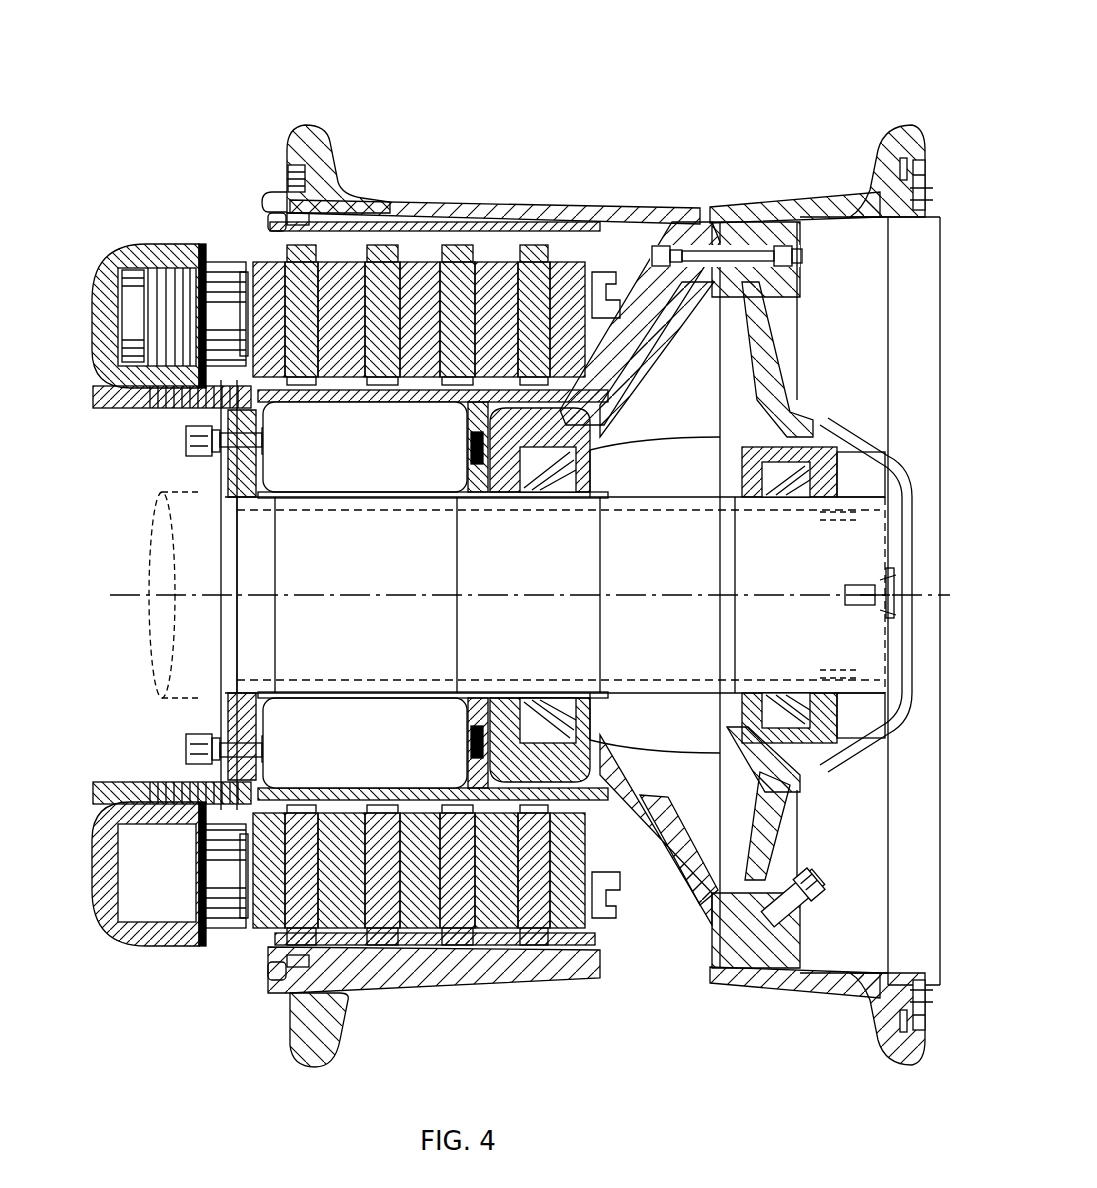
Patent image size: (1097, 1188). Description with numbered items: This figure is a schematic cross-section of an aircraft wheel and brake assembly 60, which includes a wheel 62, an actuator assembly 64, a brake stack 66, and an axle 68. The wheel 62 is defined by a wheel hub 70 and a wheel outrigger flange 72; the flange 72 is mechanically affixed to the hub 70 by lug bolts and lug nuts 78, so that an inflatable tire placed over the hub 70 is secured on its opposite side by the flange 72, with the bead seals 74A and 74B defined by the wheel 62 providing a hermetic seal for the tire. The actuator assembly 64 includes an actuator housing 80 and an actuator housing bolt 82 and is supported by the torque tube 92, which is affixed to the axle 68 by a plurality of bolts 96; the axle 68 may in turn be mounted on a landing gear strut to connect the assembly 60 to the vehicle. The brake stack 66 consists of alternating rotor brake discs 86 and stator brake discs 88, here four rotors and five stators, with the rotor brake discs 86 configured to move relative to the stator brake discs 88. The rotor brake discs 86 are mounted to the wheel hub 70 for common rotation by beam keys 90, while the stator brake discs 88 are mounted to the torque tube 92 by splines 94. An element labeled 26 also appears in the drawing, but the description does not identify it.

The wheel and brake assembly 60 is at (737, 69).
The wheel 62 is at (655, 175).
The actuator assembly 64 is at (95, 238).
The brake stack 66 is at (242, 968).
The axle 68 is at (541, 556).
The wheel hub 70 is at (508, 203).
The wheel outrigger flange 72 is at (790, 192).
The bead seal 74A is at (875, 160).
The bead seal 74B is at (338, 163).
The hub 26 is at (742, 232).
The lug nut 78 is at (803, 257).
The actuator housing 80 is at (88, 318).
The actuator housing bolt 82 is at (108, 412).
The rotor brake disc 86 is at (378, 932).
The stator brake disc 88 is at (412, 905).
The beam key 90 is at (604, 280).
The torque tube 92 is at (364, 404).
The spline 94 is at (376, 800).
The bolt 96 is at (210, 745).